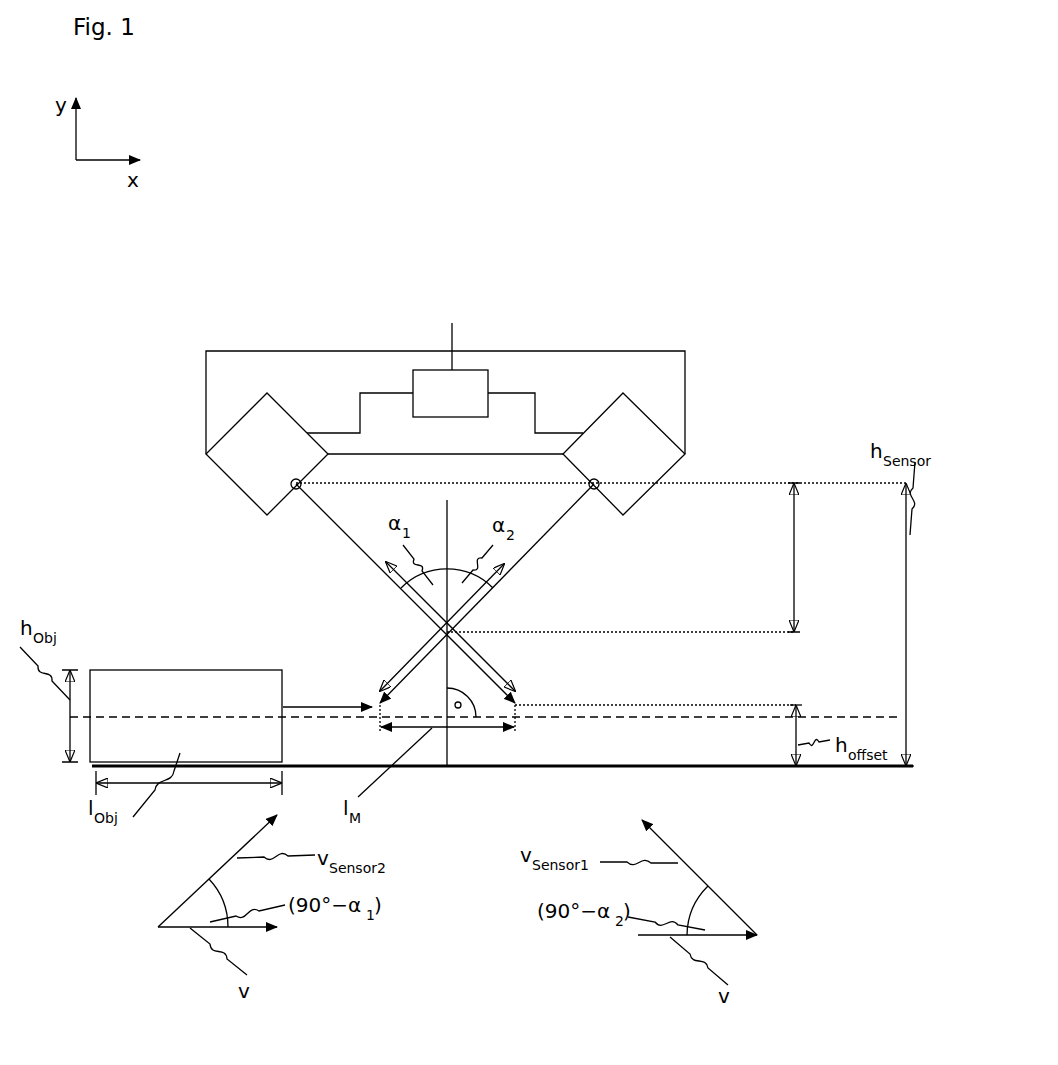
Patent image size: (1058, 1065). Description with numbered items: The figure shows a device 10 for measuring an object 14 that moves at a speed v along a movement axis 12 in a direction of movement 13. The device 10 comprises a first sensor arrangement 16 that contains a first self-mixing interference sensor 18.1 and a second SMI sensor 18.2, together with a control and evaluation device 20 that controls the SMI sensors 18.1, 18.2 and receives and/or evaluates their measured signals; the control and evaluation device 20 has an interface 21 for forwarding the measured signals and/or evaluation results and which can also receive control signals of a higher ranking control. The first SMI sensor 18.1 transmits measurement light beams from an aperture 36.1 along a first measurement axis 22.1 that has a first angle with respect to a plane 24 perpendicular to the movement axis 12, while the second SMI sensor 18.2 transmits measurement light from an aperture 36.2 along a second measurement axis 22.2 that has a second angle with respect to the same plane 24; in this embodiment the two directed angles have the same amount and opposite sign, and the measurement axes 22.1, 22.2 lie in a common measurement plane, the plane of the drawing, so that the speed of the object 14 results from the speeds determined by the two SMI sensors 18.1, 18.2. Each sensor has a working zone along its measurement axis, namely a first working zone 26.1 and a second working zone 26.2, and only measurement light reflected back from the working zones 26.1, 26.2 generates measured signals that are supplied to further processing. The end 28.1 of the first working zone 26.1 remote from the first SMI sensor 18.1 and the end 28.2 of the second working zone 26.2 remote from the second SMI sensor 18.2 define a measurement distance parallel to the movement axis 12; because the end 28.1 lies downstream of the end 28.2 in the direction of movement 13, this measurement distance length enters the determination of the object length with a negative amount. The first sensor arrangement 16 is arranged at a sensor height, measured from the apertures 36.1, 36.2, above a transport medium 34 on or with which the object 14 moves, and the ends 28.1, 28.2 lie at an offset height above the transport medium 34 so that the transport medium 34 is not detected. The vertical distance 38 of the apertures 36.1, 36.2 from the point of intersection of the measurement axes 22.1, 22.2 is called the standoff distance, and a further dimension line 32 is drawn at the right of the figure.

The device 10 is at (193, 335).
The movement axis 12 is at (537, 718).
The direction of movement 13 is at (325, 707).
The object 14 is at (188, 683).
The first sensor arrangement 16 is at (660, 387).
The first self-mixing interference sensor 18.1 is at (222, 462).
The second SMI sensor 18.2 is at (650, 480).
The control and evaluation device 20 is at (472, 382).
The interface 21 is at (455, 330).
The first measurement axis 22.1 is at (373, 558).
The second measurement axis 22.2 is at (543, 542).
The plane perpendicular to the movement axis 24 is at (447, 747).
The first working zone 26.1 is at (493, 657).
The second working zone 26.2 is at (400, 668).
The end of the first working zone 28.1 is at (525, 690).
The end of the second working zone 28.2 is at (375, 698).
The measurement plane 32 is at (797, 682).
The transport medium 34 is at (718, 766).
The aperture 36.1 is at (289, 480).
The aperture 36.2 is at (600, 479).
The vertical distance 38 is at (796, 568).